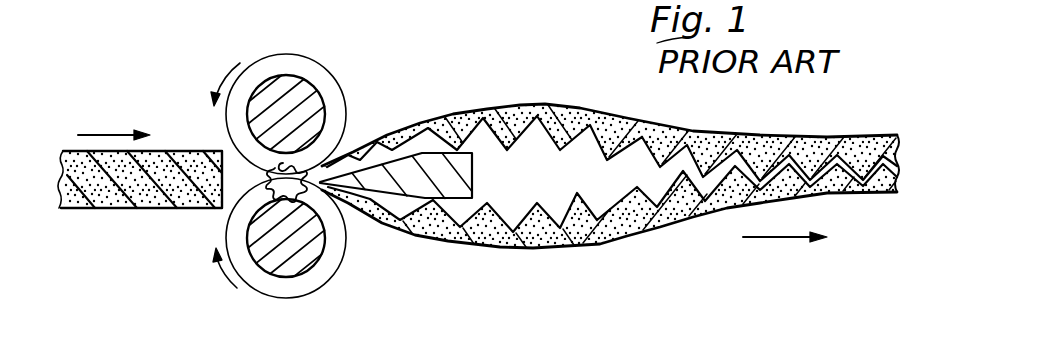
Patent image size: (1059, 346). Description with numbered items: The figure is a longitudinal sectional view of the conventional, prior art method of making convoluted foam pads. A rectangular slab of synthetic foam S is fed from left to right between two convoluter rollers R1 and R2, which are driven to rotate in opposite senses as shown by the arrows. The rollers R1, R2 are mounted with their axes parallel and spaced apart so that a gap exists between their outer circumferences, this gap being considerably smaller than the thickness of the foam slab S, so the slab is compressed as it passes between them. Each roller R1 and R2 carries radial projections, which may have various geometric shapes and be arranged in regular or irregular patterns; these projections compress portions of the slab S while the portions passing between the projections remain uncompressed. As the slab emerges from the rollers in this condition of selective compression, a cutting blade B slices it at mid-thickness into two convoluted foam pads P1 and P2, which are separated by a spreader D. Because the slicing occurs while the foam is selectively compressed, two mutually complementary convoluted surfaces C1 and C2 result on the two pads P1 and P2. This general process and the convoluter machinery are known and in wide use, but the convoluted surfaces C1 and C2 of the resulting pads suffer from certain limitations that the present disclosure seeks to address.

The foam slab S is at (149, 207).
The convoluter roller R1 is at (325, 71).
The convoluter roller R2 is at (338, 264).
The cutting blade B is at (326, 162).
The spreader D is at (473, 178).
The convoluted foam pad P1 is at (565, 104).
The convoluted foam pad P2 is at (603, 245).
The convoluted surface C1 is at (597, 147).
The convoluted surface C2 is at (620, 189).